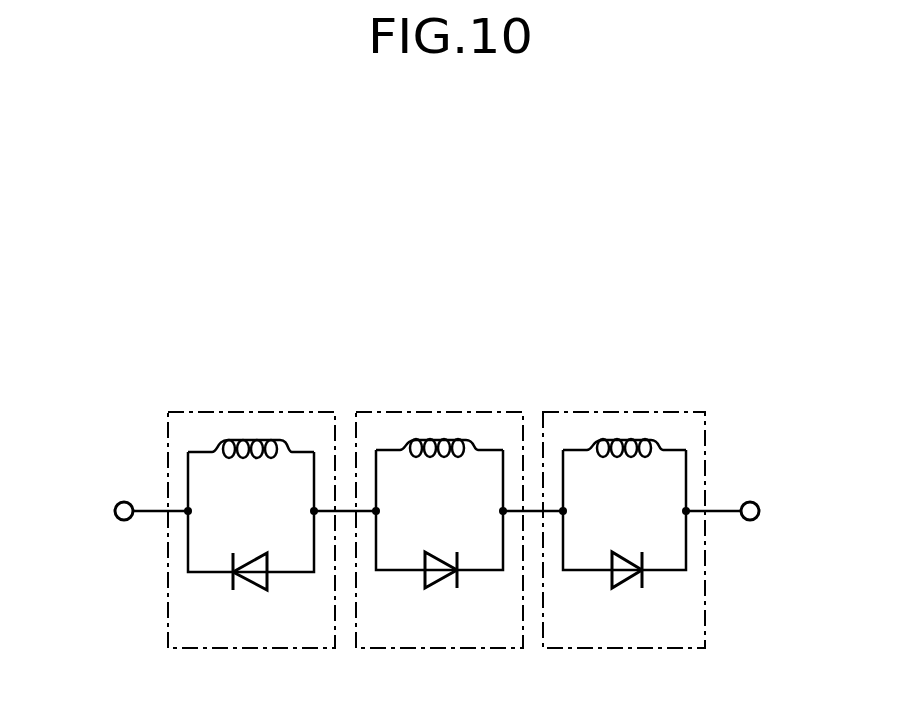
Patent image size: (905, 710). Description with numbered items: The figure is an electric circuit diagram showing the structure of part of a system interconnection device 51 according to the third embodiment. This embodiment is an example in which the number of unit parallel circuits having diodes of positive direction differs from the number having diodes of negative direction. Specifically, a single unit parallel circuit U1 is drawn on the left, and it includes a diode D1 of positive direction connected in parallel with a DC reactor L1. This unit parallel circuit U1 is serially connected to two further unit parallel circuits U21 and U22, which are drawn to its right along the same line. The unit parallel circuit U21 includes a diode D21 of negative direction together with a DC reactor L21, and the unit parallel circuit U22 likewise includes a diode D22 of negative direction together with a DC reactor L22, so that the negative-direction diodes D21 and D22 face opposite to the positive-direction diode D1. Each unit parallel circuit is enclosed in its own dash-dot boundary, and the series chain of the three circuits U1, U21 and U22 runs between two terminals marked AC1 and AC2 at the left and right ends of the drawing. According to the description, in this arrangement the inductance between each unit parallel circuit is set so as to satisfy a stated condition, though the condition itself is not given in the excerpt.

The system interconnection device 51 is at (117, 338).
The unit parallel circuit U1 is at (248, 412).
The unit parallel circuit U21 is at (440, 412).
The unit parallel circuit U22 is at (627, 412).
The DC reactor L1 is at (240, 458).
The DC reactor L21 is at (428, 457).
The DC reactor L22 is at (614, 457).
The diode of positive direction D1 is at (258, 590).
The diode of negative direction D21 is at (442, 588).
The diode of negative direction D22 is at (628, 588).
The AC input terminal AC1 is at (114, 511).
The AC output terminal AC2 is at (750, 500).